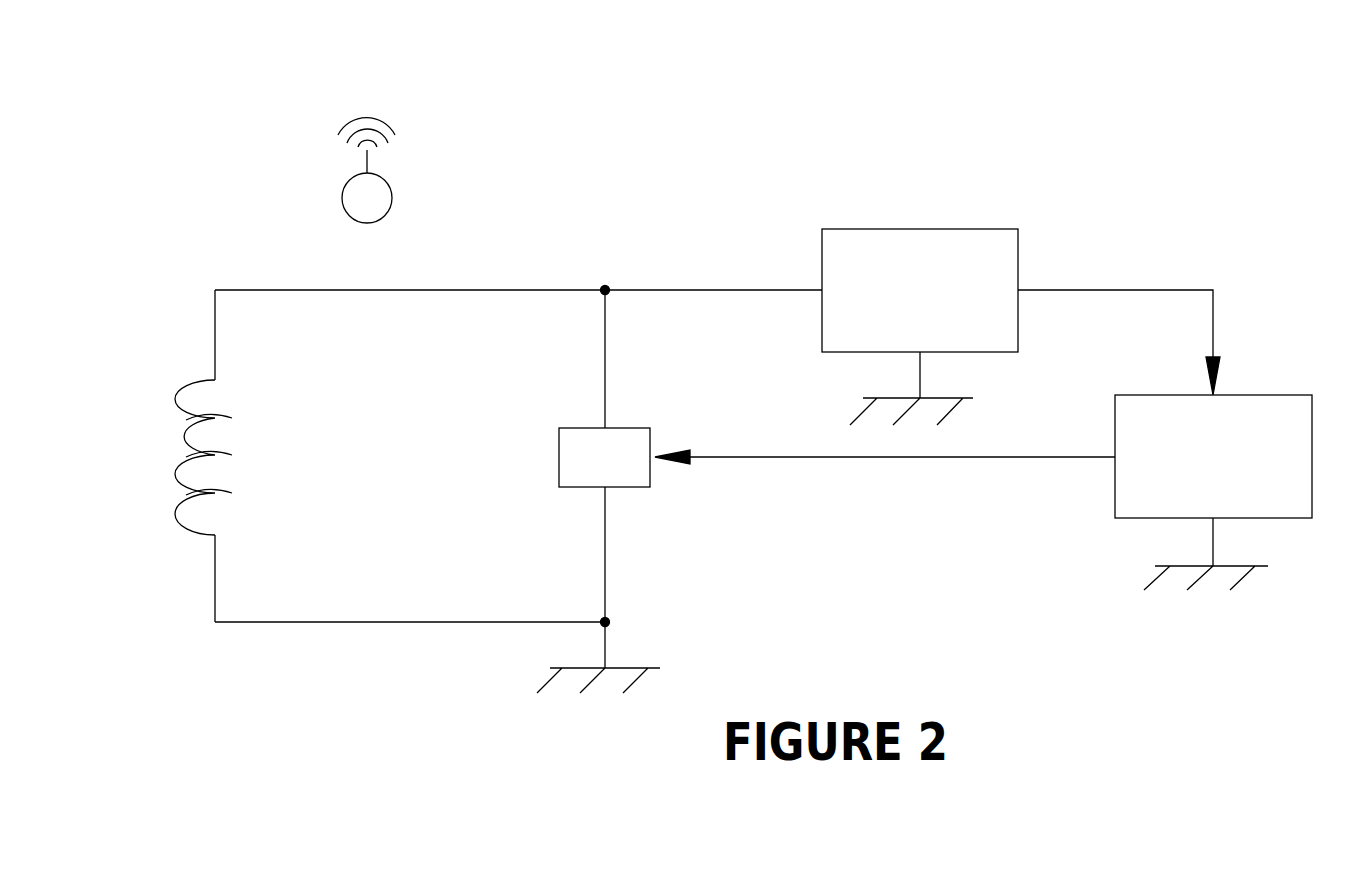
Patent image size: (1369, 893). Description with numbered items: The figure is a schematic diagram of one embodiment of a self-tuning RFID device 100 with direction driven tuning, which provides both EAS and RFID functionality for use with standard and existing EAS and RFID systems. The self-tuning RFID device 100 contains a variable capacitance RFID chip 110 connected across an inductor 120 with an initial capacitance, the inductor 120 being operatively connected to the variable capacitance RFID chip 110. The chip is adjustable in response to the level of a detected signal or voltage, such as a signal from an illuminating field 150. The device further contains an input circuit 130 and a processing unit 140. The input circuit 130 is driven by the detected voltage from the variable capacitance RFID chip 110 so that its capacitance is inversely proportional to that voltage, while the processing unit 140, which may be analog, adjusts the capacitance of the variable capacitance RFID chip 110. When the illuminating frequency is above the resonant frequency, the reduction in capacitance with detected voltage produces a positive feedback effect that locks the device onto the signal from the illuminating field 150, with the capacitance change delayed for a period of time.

The self-tuning RFID device 100 is at (738, 224).
The variable capacitance RFID chip 110 is at (615, 478).
The inductor 120 is at (189, 383).
The input circuit 130 is at (908, 242).
The processing unit 140 is at (1270, 408).
The illuminating field 150 is at (414, 192).